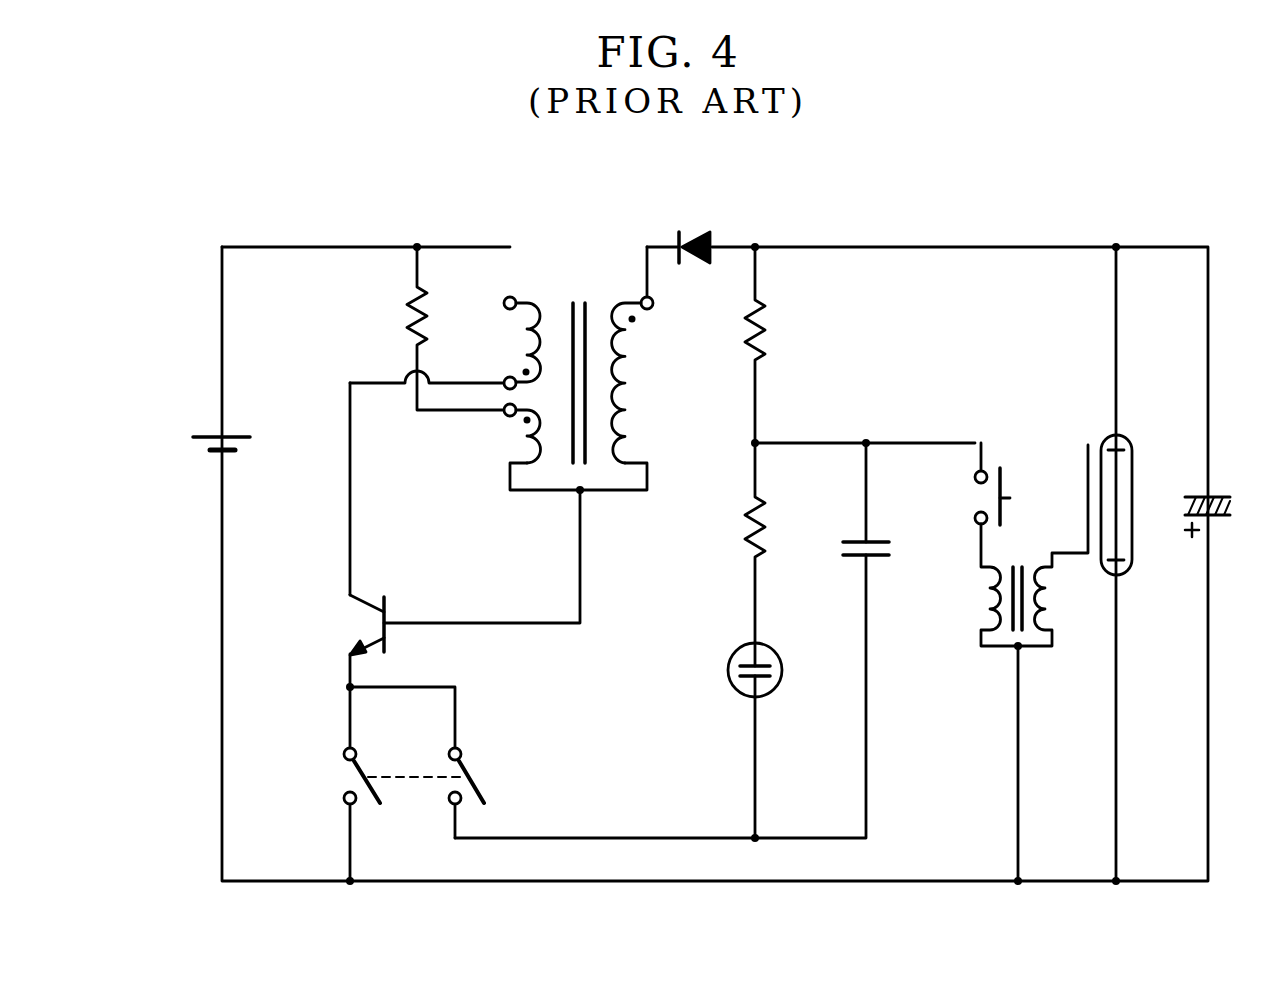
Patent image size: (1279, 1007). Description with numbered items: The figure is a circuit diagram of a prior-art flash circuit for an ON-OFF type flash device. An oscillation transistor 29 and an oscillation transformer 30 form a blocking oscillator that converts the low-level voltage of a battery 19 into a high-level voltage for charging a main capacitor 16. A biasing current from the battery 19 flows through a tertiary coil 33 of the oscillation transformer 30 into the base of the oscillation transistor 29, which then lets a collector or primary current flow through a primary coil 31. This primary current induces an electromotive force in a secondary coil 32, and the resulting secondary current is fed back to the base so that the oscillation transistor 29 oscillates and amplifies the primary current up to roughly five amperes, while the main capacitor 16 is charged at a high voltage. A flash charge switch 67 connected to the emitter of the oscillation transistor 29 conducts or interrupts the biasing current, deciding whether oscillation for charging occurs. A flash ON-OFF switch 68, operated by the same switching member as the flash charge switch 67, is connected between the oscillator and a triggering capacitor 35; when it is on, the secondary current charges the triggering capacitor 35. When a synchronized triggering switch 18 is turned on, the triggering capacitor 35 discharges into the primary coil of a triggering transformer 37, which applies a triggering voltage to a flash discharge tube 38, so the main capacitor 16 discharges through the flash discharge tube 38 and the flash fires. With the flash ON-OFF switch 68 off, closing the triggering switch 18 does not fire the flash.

The main capacitor 16 is at (1221, 495).
The synchronized triggering switch 18 is at (1006, 477).
The battery 19 is at (234, 433).
The oscillation transistor 29 is at (388, 604).
The oscillation transformer 30 is at (582, 262).
The primary coil 31 is at (522, 301).
The secondary coil 32 is at (626, 383).
The tertiary coil 33 is at (536, 437).
The triggering capacitor 35 is at (881, 540).
The triggering transformer 37 is at (1036, 532).
The flash discharge tube 38 is at (1134, 466).
The flash charge switch 67 is at (362, 764).
The flash ON-OFF switch 68 is at (472, 764).